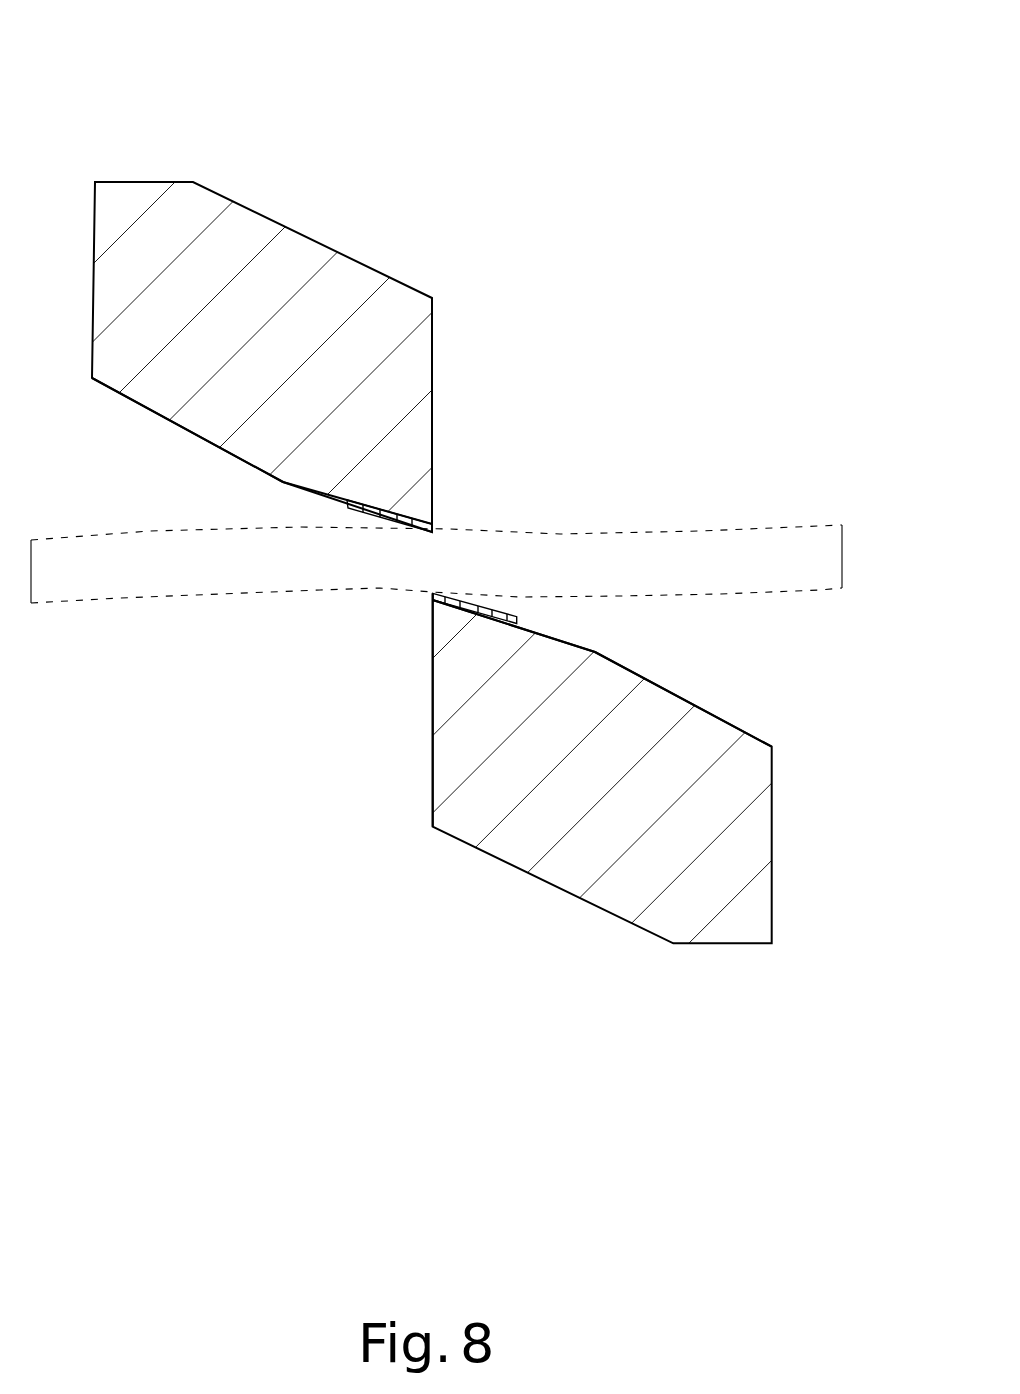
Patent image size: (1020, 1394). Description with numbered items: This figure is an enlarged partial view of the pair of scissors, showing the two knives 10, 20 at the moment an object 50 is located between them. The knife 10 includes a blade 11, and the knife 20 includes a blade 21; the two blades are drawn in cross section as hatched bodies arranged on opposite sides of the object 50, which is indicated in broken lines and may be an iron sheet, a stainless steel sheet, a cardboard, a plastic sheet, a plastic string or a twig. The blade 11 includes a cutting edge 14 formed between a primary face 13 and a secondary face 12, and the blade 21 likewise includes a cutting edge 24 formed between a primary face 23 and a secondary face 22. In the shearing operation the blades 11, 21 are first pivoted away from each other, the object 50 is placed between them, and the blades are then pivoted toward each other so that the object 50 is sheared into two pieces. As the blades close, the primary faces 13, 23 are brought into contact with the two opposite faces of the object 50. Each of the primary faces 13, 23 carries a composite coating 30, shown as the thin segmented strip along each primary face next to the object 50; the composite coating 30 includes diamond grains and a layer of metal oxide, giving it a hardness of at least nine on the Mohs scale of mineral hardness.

The knife 10 is at (622, 996).
The blade 11 is at (523, 828).
The secondary face 12 is at (432, 713).
The primary face 13 is at (607, 655).
The cutting edge 14 is at (432, 595).
The knife 20 is at (116, 118).
The blade 21 is at (268, 267).
The secondary face 22 is at (433, 417).
The primary face 23 is at (270, 476).
The cutting edge 24 is at (435, 524).
The composite coating 30 is at (475, 607).
The object 50 is at (718, 540).